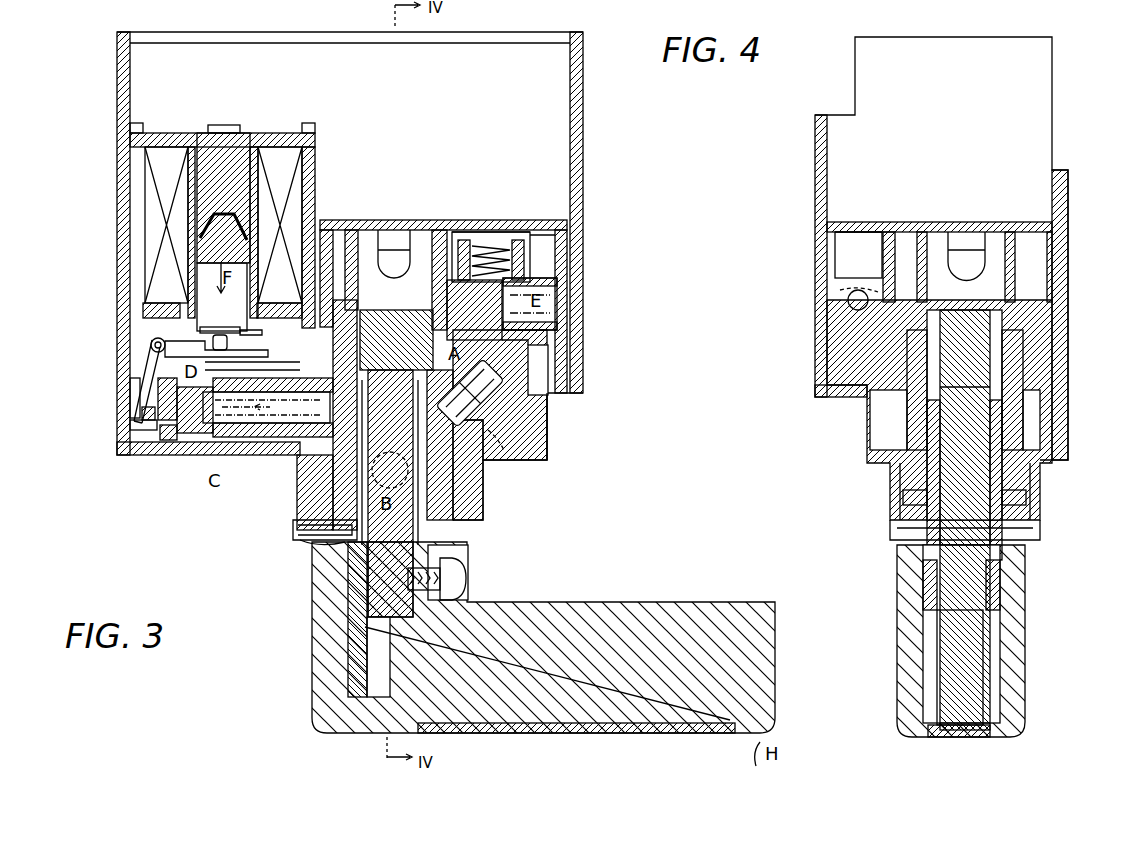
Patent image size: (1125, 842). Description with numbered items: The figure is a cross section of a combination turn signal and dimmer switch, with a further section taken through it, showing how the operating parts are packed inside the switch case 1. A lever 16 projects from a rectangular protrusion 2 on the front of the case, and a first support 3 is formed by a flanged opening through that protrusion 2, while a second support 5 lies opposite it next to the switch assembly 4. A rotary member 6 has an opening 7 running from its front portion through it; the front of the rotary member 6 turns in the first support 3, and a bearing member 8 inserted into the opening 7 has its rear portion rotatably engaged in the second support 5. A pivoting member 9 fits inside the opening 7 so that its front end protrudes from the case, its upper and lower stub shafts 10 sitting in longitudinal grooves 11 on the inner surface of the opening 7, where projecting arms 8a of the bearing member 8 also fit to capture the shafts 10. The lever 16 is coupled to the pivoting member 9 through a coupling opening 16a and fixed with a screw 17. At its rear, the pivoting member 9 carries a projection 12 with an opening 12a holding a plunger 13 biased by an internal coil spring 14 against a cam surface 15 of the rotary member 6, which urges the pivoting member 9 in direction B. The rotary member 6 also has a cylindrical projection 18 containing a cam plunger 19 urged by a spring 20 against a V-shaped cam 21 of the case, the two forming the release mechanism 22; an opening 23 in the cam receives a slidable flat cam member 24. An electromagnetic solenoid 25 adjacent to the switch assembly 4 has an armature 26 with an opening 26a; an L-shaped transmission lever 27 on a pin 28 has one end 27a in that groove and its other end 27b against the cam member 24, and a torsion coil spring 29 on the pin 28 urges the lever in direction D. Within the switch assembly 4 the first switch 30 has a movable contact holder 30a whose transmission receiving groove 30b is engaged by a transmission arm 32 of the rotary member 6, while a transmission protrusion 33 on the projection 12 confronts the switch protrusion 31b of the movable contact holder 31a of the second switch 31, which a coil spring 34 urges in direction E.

In FIG. 3, the switch case 1 is at (160, 447).
In FIG. 4, the switch case 1 is at (1068, 370).
In FIG. 3, the rectangular protrusion 2 is at (312, 545).
In FIG. 4, the rectangular protrusion 2 is at (900, 530).
In FIG. 3, the first support 3 is at (293, 528).
In FIG. 3, the switch assembly 4 is at (567, 342).
In FIG. 4, the switch assembly 4 is at (1000, 222).
In FIG. 3, the second support 5 is at (358, 302).
In FIG. 4, the second support 5 is at (928, 302).
In FIG. 3, the rotary member 6 is at (340, 340).
In FIG. 4, the rotary member 6 is at (885, 415).
In FIG. 3, the opening 7 is at (390, 493).
In FIG. 3, the bearing member 8 is at (420, 312).
In FIG. 4, the bearing member 8 is at (985, 312).
In FIG. 4, the projecting arms 8a is at (905, 425).
In FIG. 3, the pivoting member 9 is at (335, 590).
In FIG. 4, the pivoting member 9 is at (1005, 575).
In FIG. 3, the stub shafts 10 is at (391, 448).
In FIG. 4, the stub shafts 10 is at (900, 470).
In FIG. 4, the longitudinal grooves 11 is at (910, 492).
In FIG. 3, the projection 12 is at (525, 420).
In FIG. 3, the opening 12a is at (475, 332).
In FIG. 3, the plunger 13 is at (545, 370).
In FIG. 3, the coil spring 14 is at (500, 440).
In FIG. 3, the cam surface 15 is at (550, 405).
In FIG. 3, the lever 16 is at (345, 735).
In FIG. 4, the lever 16 is at (1025, 680).
In FIG. 3, the coupling opening 16a is at (348, 642).
In FIG. 4, the coupling opening 16a is at (1000, 600).
In FIG. 3, the screw 17 is at (455, 565).
In FIG. 3, the cylindrical projection 18 is at (250, 437).
In FIG. 3, the cam plunger 19 is at (193, 435).
In FIG. 3, the spring 20 is at (325, 425).
In FIG. 3, the V-shaped cam 21 is at (172, 442).
In FIG. 3, the release mechanism 22 is at (290, 373).
In FIG. 3, the opening 23 is at (165, 422).
In FIG. 3, the cam member 24 is at (142, 412).
In FIG. 3, the electromagnetic solenoid 25 is at (305, 178).
In FIG. 3, the armature 26 is at (262, 333).
In FIG. 3, the opening 26a is at (228, 342).
In FIG. 3, the transmission lever 27 is at (147, 362).
In FIG. 3, the one end of transmission lever 27a is at (222, 332).
In FIG. 3, the other end of transmission lever 27b is at (130, 426).
In FIG. 3, the pin 28 is at (151, 343).
In FIG. 3, the torsion coil spring 29 is at (130, 395).
In FIG. 4, the first switch 30 is at (860, 232).
In FIG. 4, the movable contact holder 30a is at (835, 250).
In FIG. 4, the transmission receiving groove 30b is at (848, 300).
In FIG. 3, the second switch 31 is at (542, 232).
In FIG. 3, the movable contact holder 31a is at (458, 232).
In FIG. 3, the switch protrusion 31b is at (548, 345).
In FIG. 4, the transmission arm 32 is at (840, 345).
In FIG. 3, the transmission protrusion 33 is at (438, 232).
In FIG. 3, the coil spring 34 is at (570, 300).